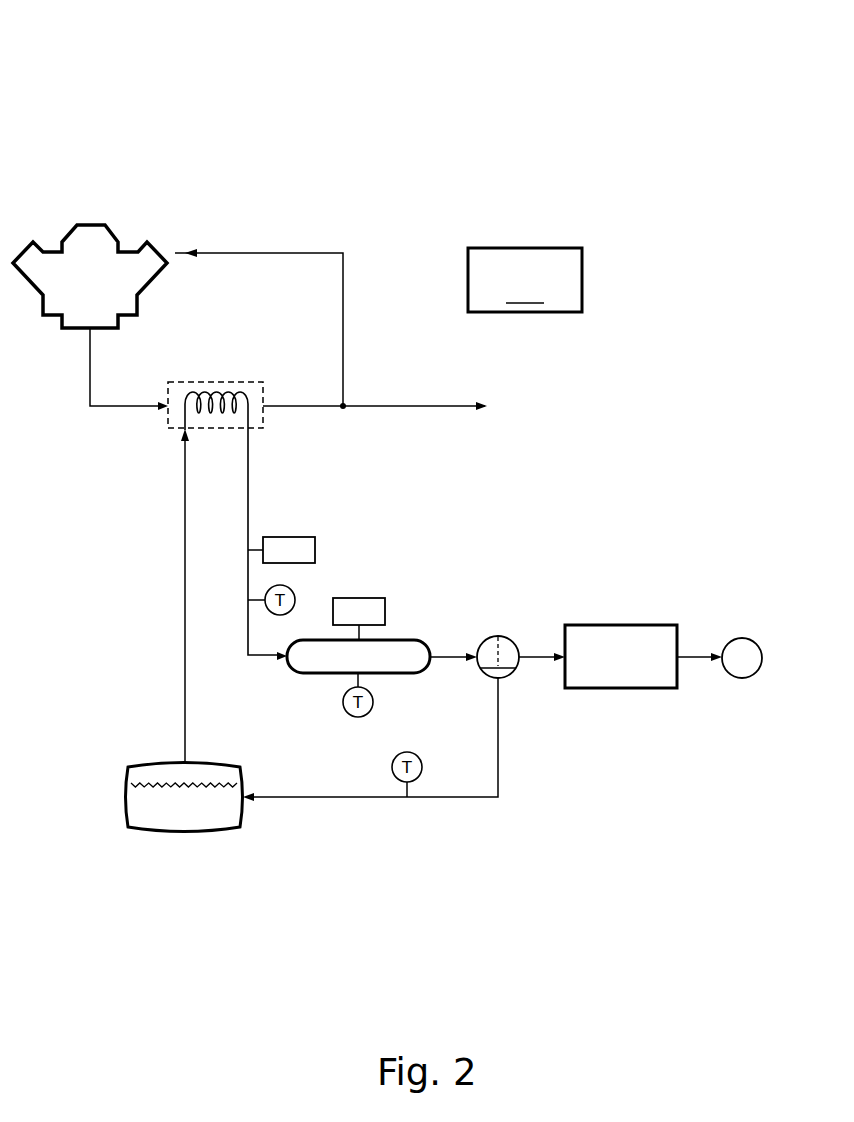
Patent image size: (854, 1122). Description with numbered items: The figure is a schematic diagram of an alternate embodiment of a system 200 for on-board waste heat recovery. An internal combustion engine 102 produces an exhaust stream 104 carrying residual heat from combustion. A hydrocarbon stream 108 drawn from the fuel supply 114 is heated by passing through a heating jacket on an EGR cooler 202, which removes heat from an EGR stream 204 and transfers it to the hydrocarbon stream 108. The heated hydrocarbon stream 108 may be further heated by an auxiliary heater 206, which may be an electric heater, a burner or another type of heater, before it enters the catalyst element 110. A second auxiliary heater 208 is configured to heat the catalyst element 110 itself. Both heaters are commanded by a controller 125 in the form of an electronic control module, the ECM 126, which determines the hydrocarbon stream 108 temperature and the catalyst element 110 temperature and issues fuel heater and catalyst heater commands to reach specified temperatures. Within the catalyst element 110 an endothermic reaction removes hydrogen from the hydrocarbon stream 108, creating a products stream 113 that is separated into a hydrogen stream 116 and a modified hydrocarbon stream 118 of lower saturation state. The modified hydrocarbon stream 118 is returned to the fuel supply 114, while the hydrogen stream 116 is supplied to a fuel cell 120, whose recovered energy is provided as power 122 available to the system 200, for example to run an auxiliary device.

The system 200 is at (86, 62).
The internal combustion engine 102 is at (90, 222).
The exhaust stream 104 is at (88, 363).
The EGR cooler 202 is at (242, 380).
The EGR stream 204 is at (345, 326).
The controller 125 is at (525, 255).
The electronic control module (ECM) 126 is at (525, 293).
The auxiliary heater 206 is at (318, 550).
The second auxiliary heater 208 is at (388, 610).
The catalyst element 110 is at (409, 675).
The products stream 113 is at (450, 660).
The hydrogen stream 116 is at (530, 650).
The modified hydrocarbon stream 118 is at (500, 757).
The fuel cell 120 is at (637, 624).
The power 122 is at (741, 638).
The hydrocarbon stream 108 is at (184, 624).
The fuel supply 114 is at (207, 832).